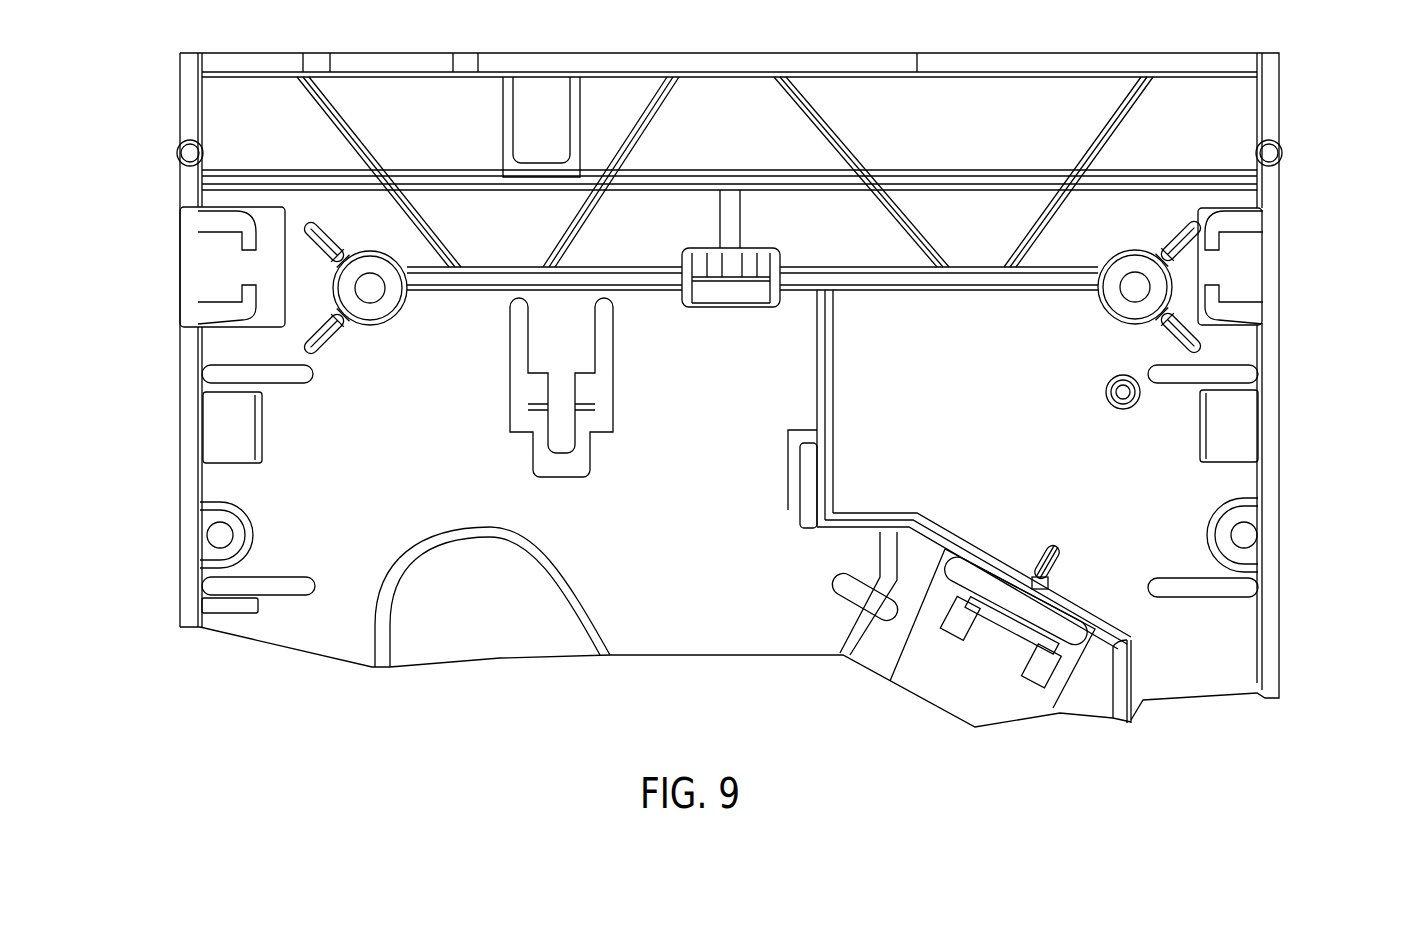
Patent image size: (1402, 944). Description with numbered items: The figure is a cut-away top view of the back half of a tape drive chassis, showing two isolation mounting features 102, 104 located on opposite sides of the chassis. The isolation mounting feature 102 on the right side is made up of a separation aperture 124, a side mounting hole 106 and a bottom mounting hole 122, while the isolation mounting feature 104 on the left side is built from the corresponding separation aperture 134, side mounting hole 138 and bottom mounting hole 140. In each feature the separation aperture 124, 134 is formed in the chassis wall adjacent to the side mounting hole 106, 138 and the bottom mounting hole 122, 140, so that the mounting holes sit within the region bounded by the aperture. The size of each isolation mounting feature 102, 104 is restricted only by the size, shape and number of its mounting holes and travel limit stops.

The isolation mounting feature 102 is at (737, 390).
The isolation mounting feature 104 is at (158, 477).
The side mounting hole 106 is at (1200, 437).
The bottom mounting hole 122 is at (1230, 535).
The separation aperture 124 is at (1153, 367).
The separation aperture 134 is at (314, 373).
The side mounting hole 138 is at (262, 428).
The bottom mounting hole 140 is at (233, 533).